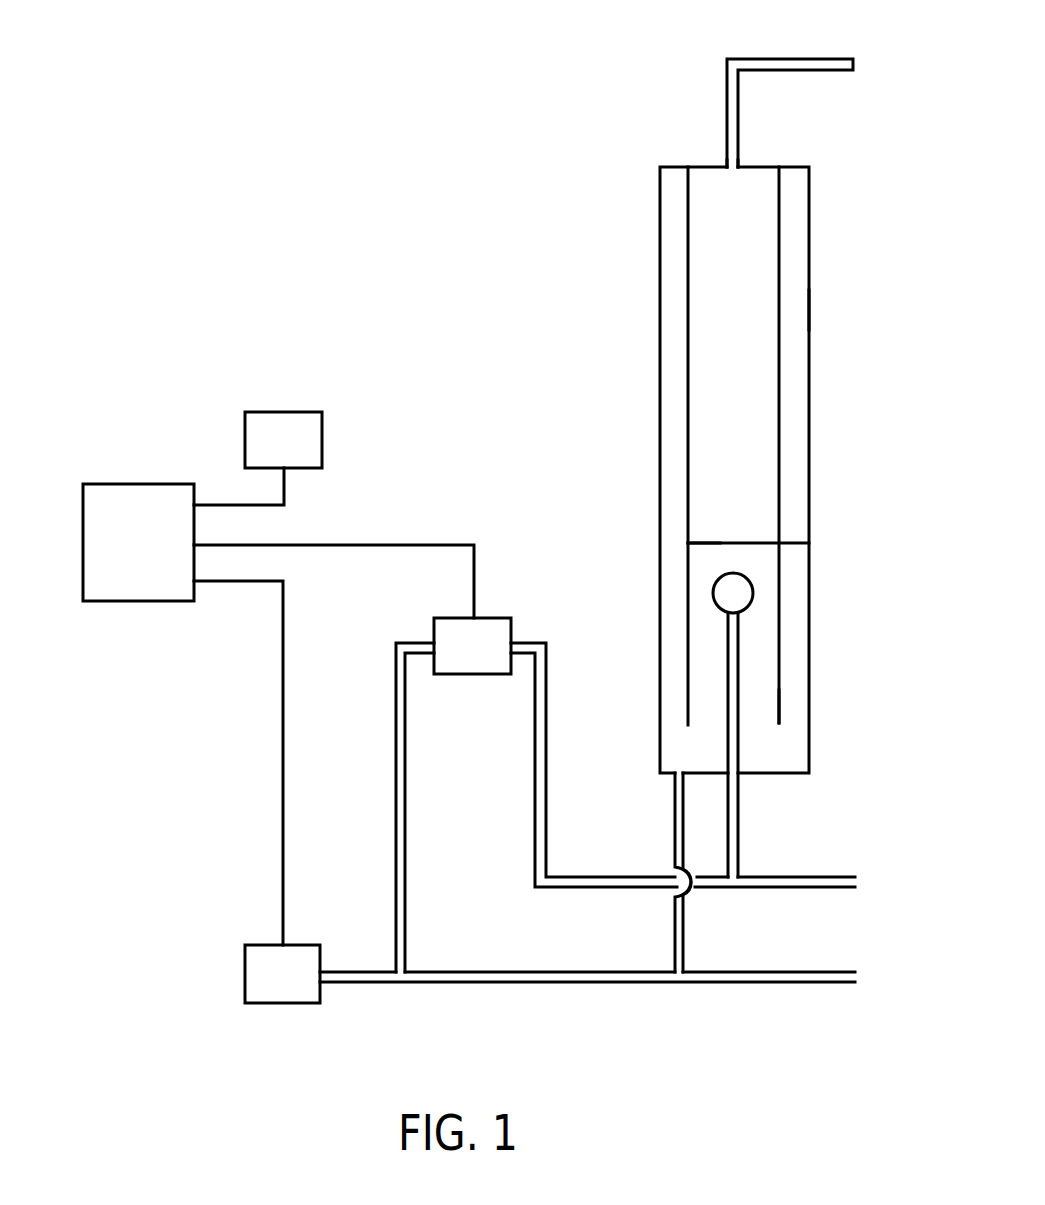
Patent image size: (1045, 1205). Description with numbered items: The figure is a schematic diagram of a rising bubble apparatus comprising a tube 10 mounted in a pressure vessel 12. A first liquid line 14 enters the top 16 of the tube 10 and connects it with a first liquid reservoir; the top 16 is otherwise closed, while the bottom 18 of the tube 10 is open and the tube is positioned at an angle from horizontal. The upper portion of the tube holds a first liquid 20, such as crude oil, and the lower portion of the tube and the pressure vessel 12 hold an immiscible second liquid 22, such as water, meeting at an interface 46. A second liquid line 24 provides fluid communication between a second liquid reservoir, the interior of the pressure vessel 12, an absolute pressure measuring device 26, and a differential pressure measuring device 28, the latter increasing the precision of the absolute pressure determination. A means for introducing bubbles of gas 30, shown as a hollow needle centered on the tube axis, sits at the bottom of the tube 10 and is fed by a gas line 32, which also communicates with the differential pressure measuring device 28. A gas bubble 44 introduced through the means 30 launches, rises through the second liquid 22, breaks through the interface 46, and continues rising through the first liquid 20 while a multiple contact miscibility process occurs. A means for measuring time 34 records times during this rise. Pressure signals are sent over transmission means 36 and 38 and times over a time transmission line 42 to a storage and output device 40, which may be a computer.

The tube 10 is at (779, 249).
The pressure vessel 12 is at (809, 306).
The first liquid line 14 is at (778, 58).
The top of the tube 16 is at (740, 166).
The bottom of the tube 18 is at (757, 722).
The first liquid 20 is at (748, 421).
The second liquid 22 is at (760, 573).
The second liquid line 24 is at (855, 977).
The absolute pressure measuring device 26 is at (297, 994).
The differential pressure measuring device 28 is at (487, 664).
The means for introducing bubbles of gas 30 is at (740, 651).
The gas line 32 is at (855, 883).
The means for measuring time 34 is at (299, 458).
The transmission means 36 is at (283, 740).
The transmission means 38 is at (408, 545).
The storage and output device 40 is at (154, 558).
The time transmission line 42 is at (268, 507).
The gas bubble 44 is at (713, 595).
The interface 46 is at (718, 543).